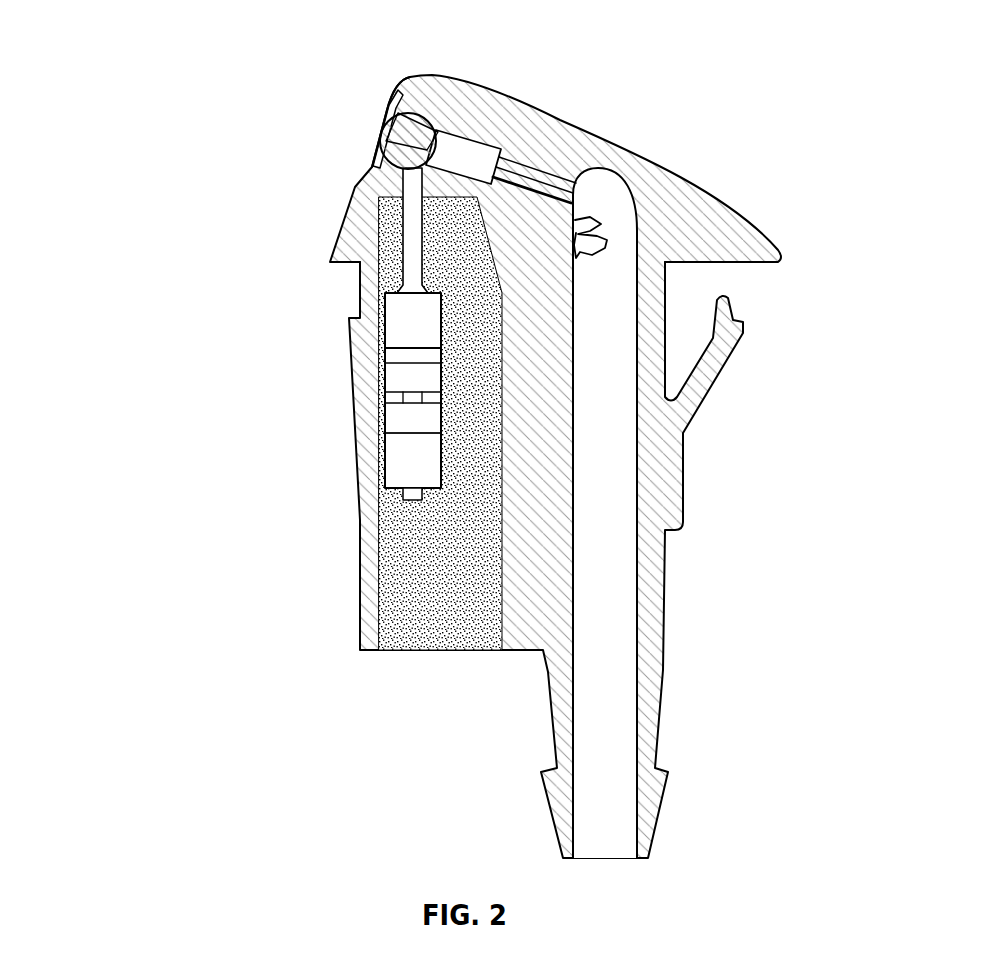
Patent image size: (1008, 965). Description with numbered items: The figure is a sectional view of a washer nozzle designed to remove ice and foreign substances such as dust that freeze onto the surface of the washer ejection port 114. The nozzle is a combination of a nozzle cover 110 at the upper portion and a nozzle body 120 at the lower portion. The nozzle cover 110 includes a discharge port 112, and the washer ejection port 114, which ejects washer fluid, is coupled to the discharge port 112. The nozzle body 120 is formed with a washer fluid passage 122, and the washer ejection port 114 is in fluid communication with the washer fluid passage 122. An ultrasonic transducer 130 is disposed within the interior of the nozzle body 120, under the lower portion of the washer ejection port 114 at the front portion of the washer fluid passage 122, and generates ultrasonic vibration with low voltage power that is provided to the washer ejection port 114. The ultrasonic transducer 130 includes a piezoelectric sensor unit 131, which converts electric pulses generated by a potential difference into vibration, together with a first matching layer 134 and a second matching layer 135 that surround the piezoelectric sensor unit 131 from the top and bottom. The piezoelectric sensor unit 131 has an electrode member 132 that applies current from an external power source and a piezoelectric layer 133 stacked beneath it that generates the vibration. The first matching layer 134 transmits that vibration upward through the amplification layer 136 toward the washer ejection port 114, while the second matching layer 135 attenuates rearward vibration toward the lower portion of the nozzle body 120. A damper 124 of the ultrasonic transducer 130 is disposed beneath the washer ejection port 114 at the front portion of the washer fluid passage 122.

The nozzle cover 110 is at (707, 212).
The discharge port 112 is at (400, 108).
The washer ejection port 114 is at (393, 152).
The nozzle body 120 is at (360, 470).
The washer fluid passage 122 is at (613, 308).
The damper 124 is at (390, 523).
The ultrasonic transducer 130 is at (175, 245).
The piezoelectric sensor unit 131 is at (212, 347).
The electrode member 132 is at (393, 357).
The piezoelectric layer 133 is at (393, 383).
The first matching layer 134 is at (400, 327).
The second matching layer 135 is at (405, 457).
The amplification layer 136 is at (412, 242).